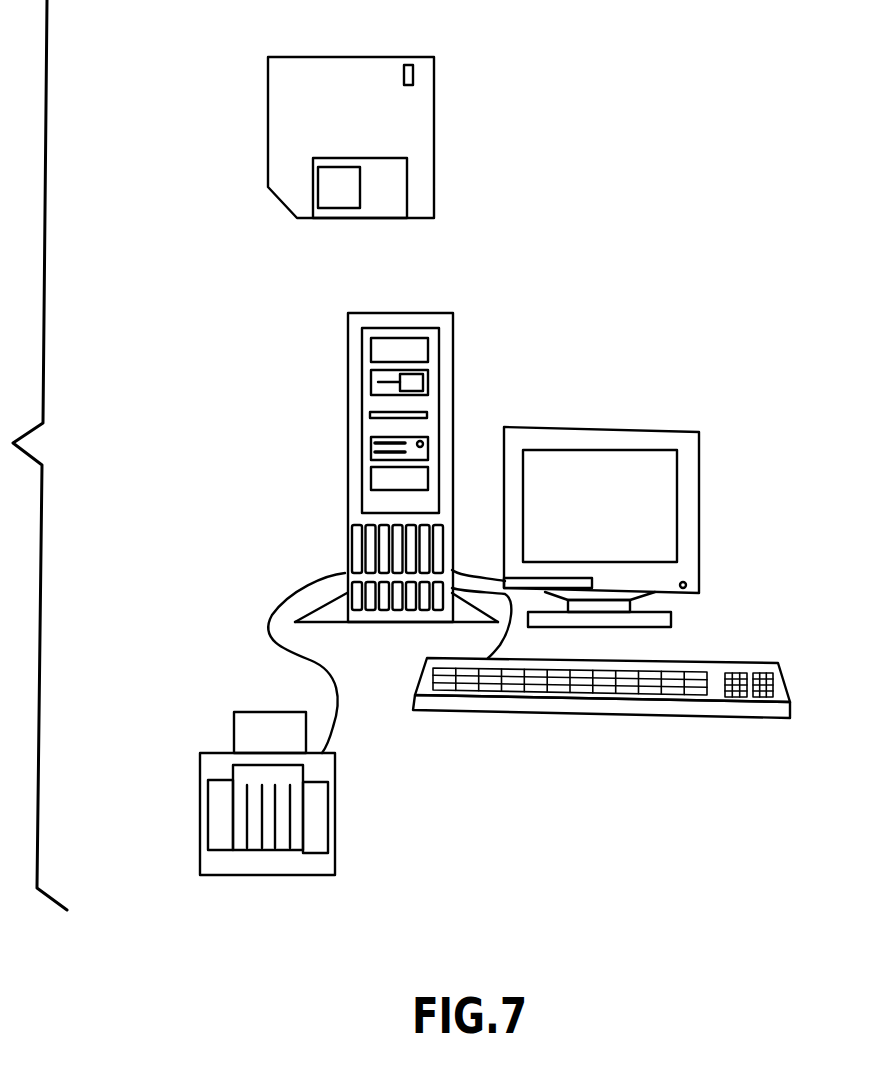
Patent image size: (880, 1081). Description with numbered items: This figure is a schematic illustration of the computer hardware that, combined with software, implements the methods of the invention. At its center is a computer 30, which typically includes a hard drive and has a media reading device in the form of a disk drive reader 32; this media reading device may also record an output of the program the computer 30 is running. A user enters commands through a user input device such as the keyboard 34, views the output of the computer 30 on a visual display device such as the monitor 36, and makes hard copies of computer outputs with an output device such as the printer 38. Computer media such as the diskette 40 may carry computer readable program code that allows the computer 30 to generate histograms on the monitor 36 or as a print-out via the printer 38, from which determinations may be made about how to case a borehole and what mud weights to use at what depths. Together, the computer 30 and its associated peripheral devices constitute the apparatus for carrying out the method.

The computer 30 is at (453, 357).
The disk drive reader 32 is at (378, 410).
The keyboard 34 is at (612, 717).
The monitor 36 is at (623, 425).
The printer 38 is at (200, 813).
The diskette 40 is at (434, 132).